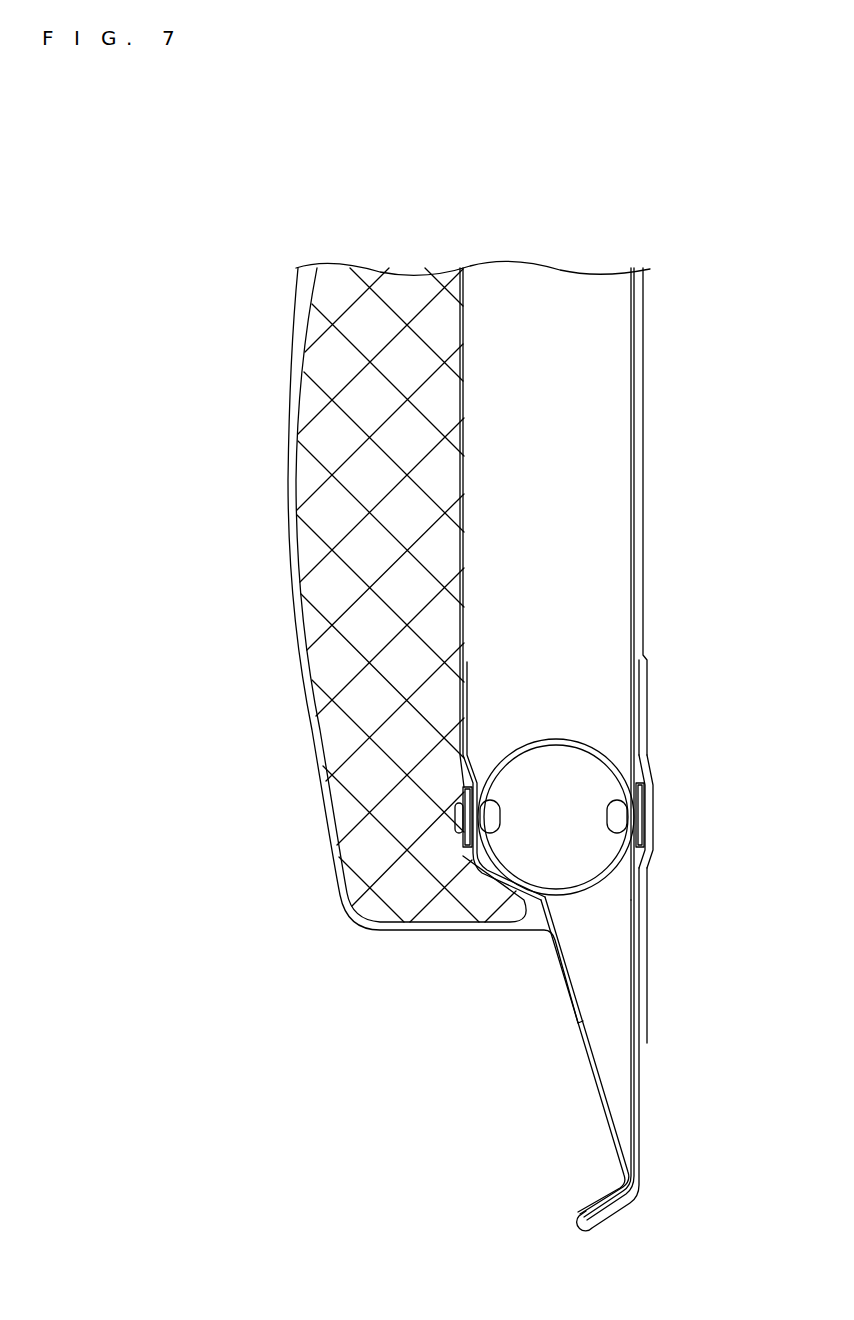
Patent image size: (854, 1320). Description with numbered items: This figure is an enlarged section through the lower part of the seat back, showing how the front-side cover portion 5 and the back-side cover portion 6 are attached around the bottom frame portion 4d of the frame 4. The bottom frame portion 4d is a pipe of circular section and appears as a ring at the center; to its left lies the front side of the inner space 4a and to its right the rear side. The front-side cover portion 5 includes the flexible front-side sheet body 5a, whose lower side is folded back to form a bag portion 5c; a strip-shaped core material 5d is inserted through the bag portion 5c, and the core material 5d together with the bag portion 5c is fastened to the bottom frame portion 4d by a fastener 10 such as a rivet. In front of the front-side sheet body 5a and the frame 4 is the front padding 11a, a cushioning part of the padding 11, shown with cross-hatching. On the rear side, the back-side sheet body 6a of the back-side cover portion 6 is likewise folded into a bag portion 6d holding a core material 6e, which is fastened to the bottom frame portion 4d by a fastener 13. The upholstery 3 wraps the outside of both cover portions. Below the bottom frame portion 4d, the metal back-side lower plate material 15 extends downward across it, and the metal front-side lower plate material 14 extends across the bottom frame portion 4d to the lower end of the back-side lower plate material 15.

The upholstery 3 is at (292, 437).
The frame 4 is at (556, 770).
The inner space 4a is at (560, 339).
The bottom frame portion 4d is at (564, 738).
The front-side cover portion 5 is at (300, 300).
The front-side sheet body 5a is at (464, 437).
The bag portion 5c is at (474, 766).
The core material 5d is at (467, 792).
The back-side cover portion 6 is at (643, 316).
The back-side sheet body 6a is at (631, 532).
The bag portion 6d is at (642, 766).
The core material 6e is at (641, 795).
The fastener 10 is at (458, 818).
The padding 11 is at (347, 595).
The front padding 11a is at (335, 368).
The fastener 13 is at (653, 818).
The front-side lower plate material 14 is at (593, 1057).
The back-side lower plate material 15 is at (632, 985).